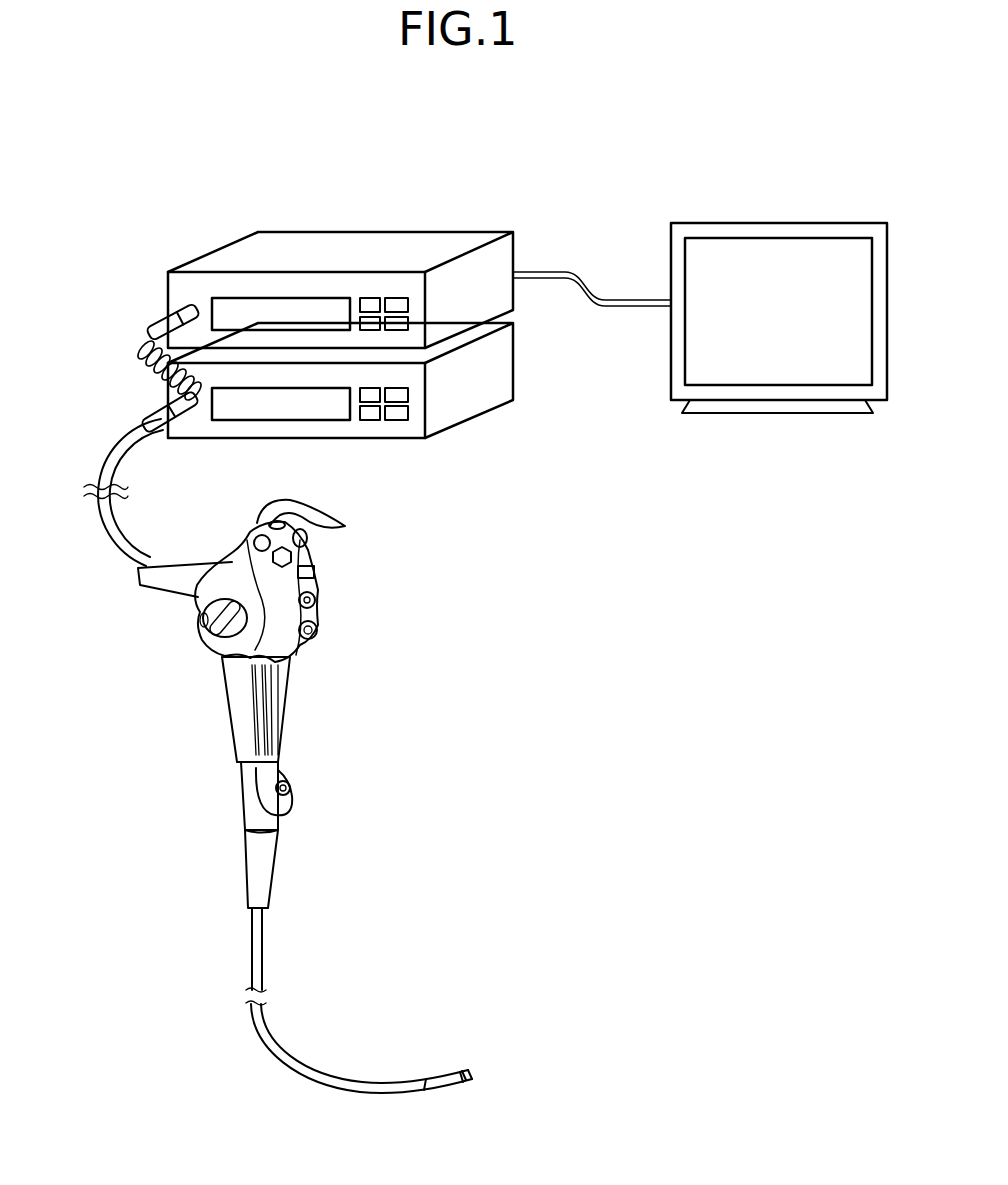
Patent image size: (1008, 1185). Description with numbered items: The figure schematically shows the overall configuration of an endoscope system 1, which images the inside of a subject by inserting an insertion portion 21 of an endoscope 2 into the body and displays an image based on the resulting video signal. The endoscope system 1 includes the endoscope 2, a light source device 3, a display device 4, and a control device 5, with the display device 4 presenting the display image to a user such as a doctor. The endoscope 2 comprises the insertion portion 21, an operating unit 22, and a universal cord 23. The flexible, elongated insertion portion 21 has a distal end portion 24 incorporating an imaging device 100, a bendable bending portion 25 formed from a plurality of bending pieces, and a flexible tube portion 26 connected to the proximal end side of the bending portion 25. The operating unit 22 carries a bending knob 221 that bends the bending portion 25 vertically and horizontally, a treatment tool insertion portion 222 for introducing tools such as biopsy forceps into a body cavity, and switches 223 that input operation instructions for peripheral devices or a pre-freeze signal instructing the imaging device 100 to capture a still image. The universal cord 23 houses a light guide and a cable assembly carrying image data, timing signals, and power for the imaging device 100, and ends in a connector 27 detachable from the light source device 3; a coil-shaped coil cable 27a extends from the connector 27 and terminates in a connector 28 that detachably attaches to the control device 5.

The endoscope system 1 is at (821, 151).
The endoscope 2 is at (414, 661).
The light source device 3 is at (503, 360).
The display device 4 is at (778, 228).
The control device 5 is at (495, 229).
The insertion portion 21 is at (306, 1076).
The operating unit 22 is at (308, 612).
The bending knob 221 is at (203, 632).
The treatment tool insertion portion 222 is at (290, 788).
The switches 223 is at (333, 526).
The universal cord 23 is at (100, 525).
The distal end portion 24 is at (465, 1090).
The bending portion 25 is at (443, 1083).
The flexible tube portion 26 is at (265, 929).
The connector 27 is at (162, 398).
The coil cable 27a is at (147, 343).
The connector 28 is at (163, 304).
The imaging device 100 is at (468, 1071).